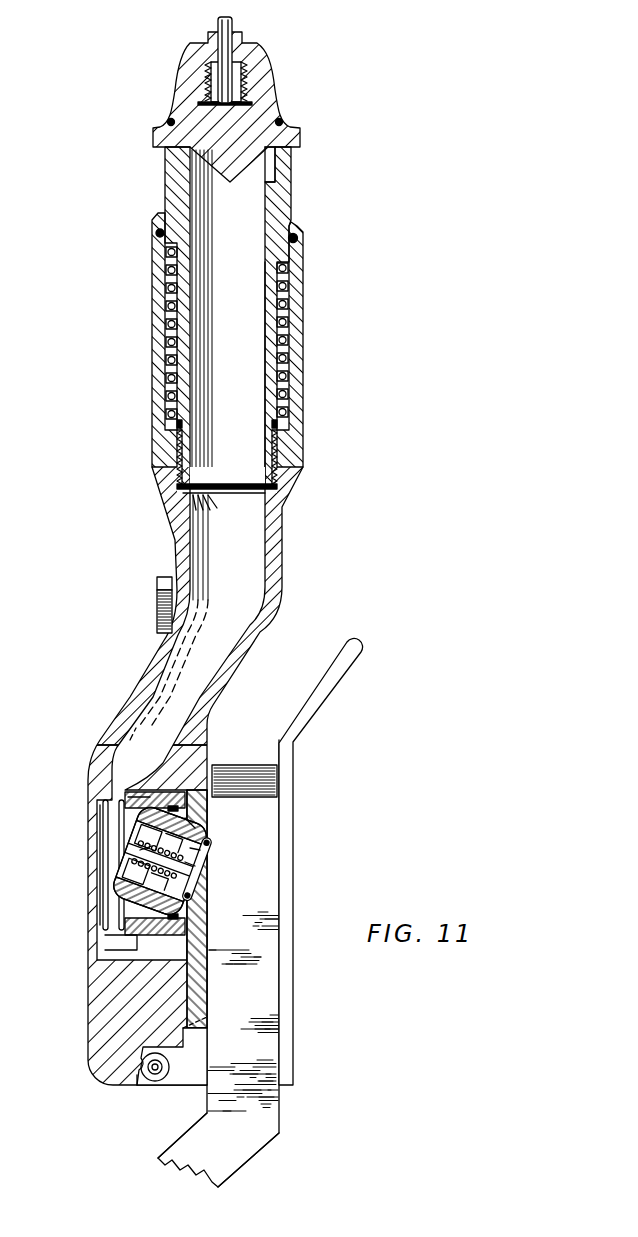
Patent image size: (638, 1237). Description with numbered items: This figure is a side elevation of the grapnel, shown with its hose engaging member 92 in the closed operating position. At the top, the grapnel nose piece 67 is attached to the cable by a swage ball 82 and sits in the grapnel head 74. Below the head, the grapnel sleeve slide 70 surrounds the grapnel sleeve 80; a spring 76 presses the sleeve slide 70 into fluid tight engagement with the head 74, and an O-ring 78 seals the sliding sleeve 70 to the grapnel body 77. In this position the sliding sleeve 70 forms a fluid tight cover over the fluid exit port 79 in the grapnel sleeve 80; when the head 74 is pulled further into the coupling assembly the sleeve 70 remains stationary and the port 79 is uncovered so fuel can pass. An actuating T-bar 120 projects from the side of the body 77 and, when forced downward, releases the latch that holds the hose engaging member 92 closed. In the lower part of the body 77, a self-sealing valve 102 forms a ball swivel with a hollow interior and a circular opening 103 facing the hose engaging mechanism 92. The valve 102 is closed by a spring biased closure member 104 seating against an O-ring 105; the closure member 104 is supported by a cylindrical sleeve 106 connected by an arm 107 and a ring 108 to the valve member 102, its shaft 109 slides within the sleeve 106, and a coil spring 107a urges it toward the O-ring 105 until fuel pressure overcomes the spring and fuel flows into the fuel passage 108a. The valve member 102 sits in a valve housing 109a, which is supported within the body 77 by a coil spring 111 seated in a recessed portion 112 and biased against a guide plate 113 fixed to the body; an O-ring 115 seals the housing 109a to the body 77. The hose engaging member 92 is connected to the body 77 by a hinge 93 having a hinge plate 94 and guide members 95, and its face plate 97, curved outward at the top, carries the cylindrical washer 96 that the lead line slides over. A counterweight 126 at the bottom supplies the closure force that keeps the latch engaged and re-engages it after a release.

The grapnel nose piece 67 is at (233, 37).
The swage ball 82 is at (245, 97).
The grapnel head 74 is at (278, 103).
The fluid exit port 79 is at (268, 165).
The grapnel sleeve slide 70 is at (295, 212).
The O-ring 78 is at (297, 239).
The spring 76 is at (284, 334).
The grapnel body 77 is at (303, 352).
The grapnel sleeve 80 is at (272, 389).
The fuel passage 108a is at (247, 558).
The actuating T-bar 120 is at (160, 580).
The O-ring 115 is at (200, 775).
The cylindrical washer 96 is at (232, 775).
The valve housing 109a is at (152, 797).
The self-sealing valve 102 is at (186, 817).
The coil spring 107a is at (201, 829).
The O-ring 105 is at (199, 855).
The circular opening 103 is at (194, 866).
The closure member 104 is at (196, 879).
The shaft 109 is at (162, 837).
The arm 107 is at (125, 818).
The coil spring 111 is at (113, 850).
The cylindrical sleeve 106 is at (123, 868).
The ring 108 is at (128, 888).
The recessed portion 112 is at (105, 908).
The hose engaging member 92 is at (296, 822).
The face plate 97 is at (293, 989).
The guide plate 113 is at (190, 983).
The hinge plate 94 is at (175, 1044).
The guide members 95 is at (139, 1082).
The hinge 93 is at (181, 1074).
The counterweight 126 is at (233, 1163).